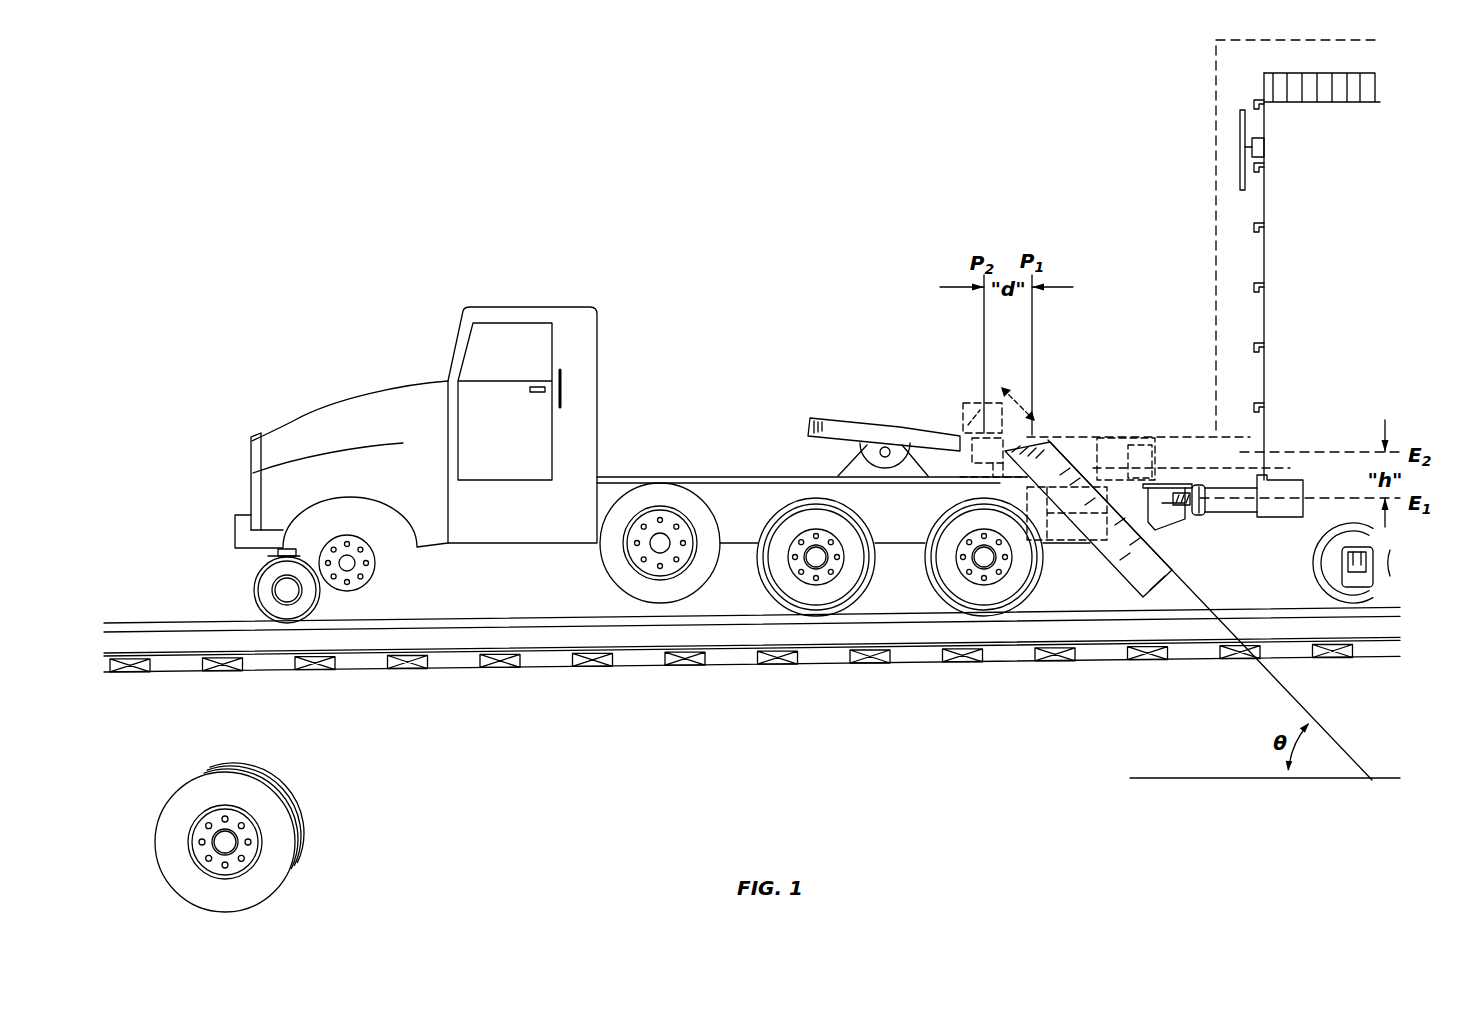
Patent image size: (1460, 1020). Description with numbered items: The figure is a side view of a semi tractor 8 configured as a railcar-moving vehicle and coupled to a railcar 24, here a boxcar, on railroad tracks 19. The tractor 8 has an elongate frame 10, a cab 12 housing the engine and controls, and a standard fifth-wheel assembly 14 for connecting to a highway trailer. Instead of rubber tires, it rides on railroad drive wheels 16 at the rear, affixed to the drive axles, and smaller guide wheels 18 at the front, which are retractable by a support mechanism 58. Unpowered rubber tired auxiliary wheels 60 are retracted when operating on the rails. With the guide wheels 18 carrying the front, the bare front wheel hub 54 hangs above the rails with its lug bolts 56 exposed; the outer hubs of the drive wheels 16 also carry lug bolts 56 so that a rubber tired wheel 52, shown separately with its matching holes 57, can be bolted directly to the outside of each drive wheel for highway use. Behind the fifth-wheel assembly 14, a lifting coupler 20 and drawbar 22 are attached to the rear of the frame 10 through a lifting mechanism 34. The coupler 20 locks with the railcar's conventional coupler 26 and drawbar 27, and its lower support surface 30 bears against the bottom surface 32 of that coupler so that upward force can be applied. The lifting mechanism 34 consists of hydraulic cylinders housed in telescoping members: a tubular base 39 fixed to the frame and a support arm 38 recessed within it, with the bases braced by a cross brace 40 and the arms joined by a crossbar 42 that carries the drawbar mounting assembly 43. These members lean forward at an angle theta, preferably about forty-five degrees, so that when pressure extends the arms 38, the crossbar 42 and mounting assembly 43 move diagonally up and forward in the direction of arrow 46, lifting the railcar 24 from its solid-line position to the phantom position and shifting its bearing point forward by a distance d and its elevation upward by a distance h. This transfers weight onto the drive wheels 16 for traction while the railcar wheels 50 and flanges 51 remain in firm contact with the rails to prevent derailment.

The semi tractor 8 is at (433, 296).
The frame 10 is at (742, 508).
The cab 12 is at (416, 406).
The fifth-wheel assembly 14 is at (867, 433).
The railroad drive wheels 16 is at (822, 592).
The guide wheels 18 is at (296, 615).
The railroad tracks 19 is at (622, 628).
The coupler 20 is at (1168, 496).
The drawbar 22 is at (1132, 495).
The railcar 24 is at (1343, 254).
The coupler 26 is at (1232, 493).
The drawbar 27 is at (1250, 495).
The lower support surface 30 is at (1168, 528).
The bottom surface 32 is at (1195, 515).
The lifting mechanism 34 is at (1083, 568).
The telescoping support arm 38 is at (1123, 478).
The base 39 is at (1103, 545).
The cross brace 40 is at (1170, 588).
The crossbar 42 is at (1033, 432).
The drawbar mounting assembly 43 is at (998, 487).
The arrow 46 is at (1019, 400).
The railcar wheels 50 is at (1360, 600).
The flanges 51 is at (1315, 605).
The rubber tired wheels 52 is at (330, 842).
The front wheel hub 54 is at (372, 580).
The lug bolts 56 is at (348, 590).
The holes 57 is at (245, 832).
The support mechanism 58 is at (273, 552).
The auxiliary wheels 60 is at (653, 497).